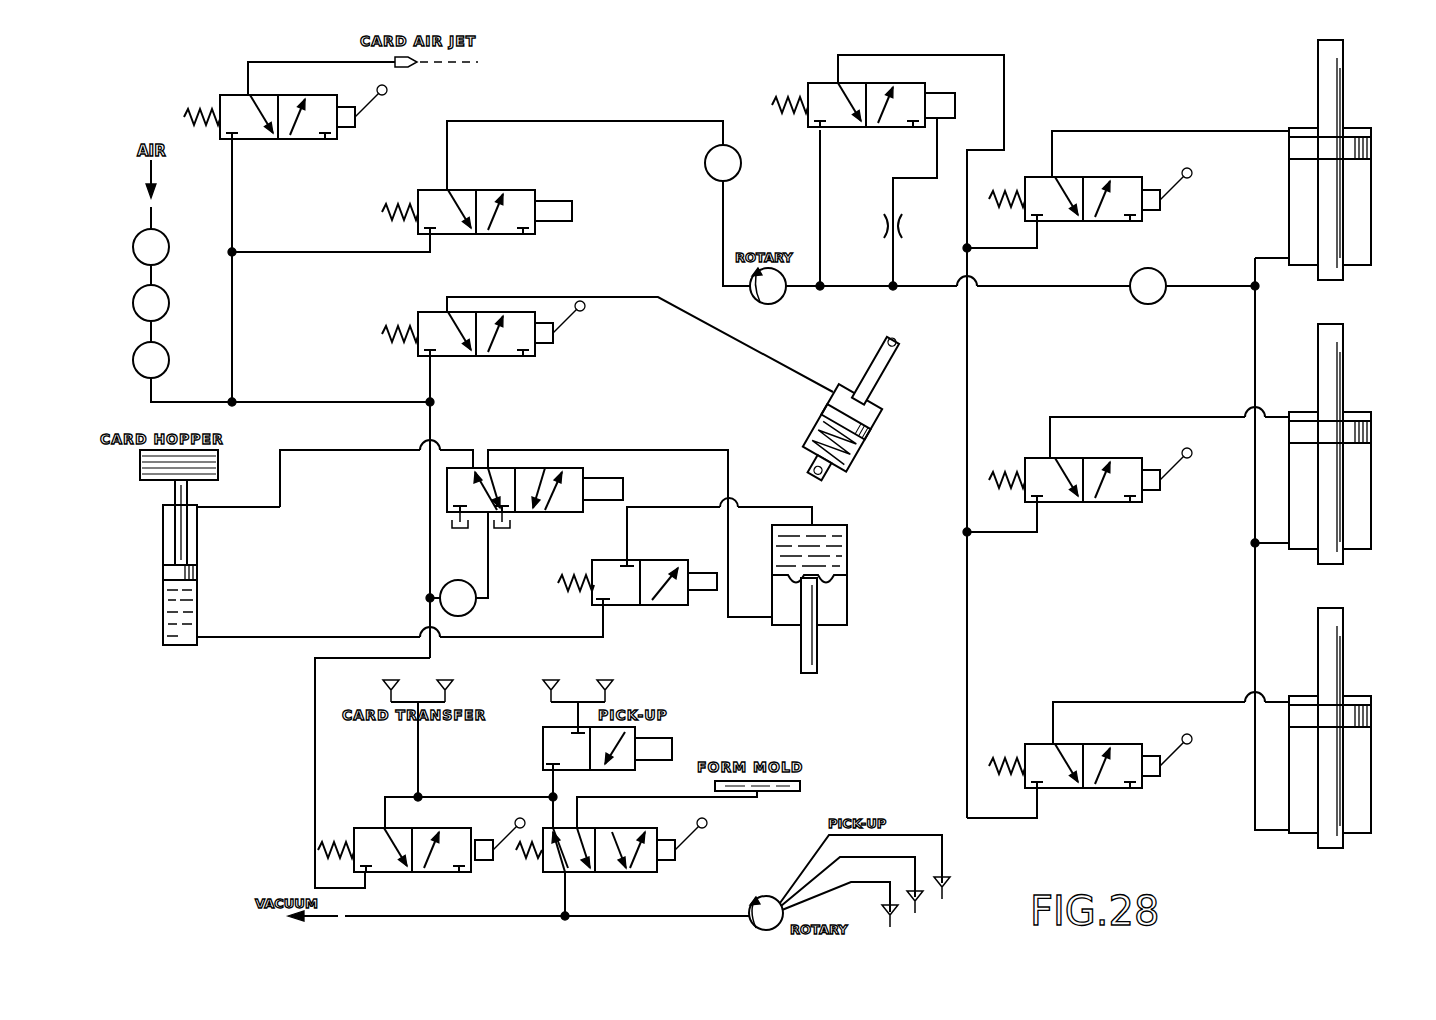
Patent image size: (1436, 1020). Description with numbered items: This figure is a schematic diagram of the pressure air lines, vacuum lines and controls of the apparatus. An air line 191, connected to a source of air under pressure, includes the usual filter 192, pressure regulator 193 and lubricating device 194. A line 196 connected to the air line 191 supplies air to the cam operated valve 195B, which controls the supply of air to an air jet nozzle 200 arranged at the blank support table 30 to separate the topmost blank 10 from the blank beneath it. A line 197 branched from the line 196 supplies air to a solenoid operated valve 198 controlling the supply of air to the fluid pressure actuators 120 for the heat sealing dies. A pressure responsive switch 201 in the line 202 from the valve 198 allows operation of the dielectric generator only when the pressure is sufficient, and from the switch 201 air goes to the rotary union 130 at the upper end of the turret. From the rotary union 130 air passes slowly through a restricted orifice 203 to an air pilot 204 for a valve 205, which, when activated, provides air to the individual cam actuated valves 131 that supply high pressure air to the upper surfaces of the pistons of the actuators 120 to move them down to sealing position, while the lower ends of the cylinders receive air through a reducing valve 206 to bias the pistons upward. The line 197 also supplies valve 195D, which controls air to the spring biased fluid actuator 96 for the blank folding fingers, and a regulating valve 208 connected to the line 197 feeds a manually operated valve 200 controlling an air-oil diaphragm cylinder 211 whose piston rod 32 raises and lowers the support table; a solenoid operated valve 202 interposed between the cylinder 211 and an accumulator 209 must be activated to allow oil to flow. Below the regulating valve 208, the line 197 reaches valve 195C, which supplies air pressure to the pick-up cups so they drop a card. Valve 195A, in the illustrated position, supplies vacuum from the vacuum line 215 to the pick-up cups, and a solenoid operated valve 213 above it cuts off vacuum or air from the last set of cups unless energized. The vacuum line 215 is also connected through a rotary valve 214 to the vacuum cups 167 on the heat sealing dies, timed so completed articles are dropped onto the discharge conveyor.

The blank 10 is at (140, 465).
The support table 30 is at (162, 482).
The piston rod 32 is at (188, 498).
The fluid actuator 96 is at (868, 442).
The fluid pressure actuator 120 is at (1368, 200).
The rotary union 130 is at (780, 304).
The cam actuated valve 131 is at (1094, 186).
The vacuum cups 167 is at (898, 916).
The air line 191 is at (147, 178).
The filter 192 is at (136, 242).
The pressure regulator 193 is at (136, 300).
The lubricating device 194 is at (133, 364).
The control valve 195A is at (602, 873).
The control valve 195B is at (232, 100).
The control valve 195C is at (368, 827).
The control valve 195D is at (428, 311).
The line 196 is at (236, 326).
The line 197 is at (316, 236).
The solenoid operated valve 198 is at (498, 192).
The air jet nozzle 200 is at (406, 72).
The pressure responsive switch 201 is at (742, 170).
The line 202 is at (646, 104).
The restricted orifice 203 is at (884, 230).
The air pilot 204 is at (950, 108).
The valve 205 is at (910, 90).
The reducing valve 206 is at (1140, 306).
The regulating valve 208 is at (474, 607).
The reservoir cylinder 209 is at (850, 570).
The air-oil diaphragm cylinder 211 is at (199, 552).
The solenoid operated valve 213 is at (642, 740).
The rotary valve 214 is at (770, 878).
The vacuum line 215 is at (452, 903).